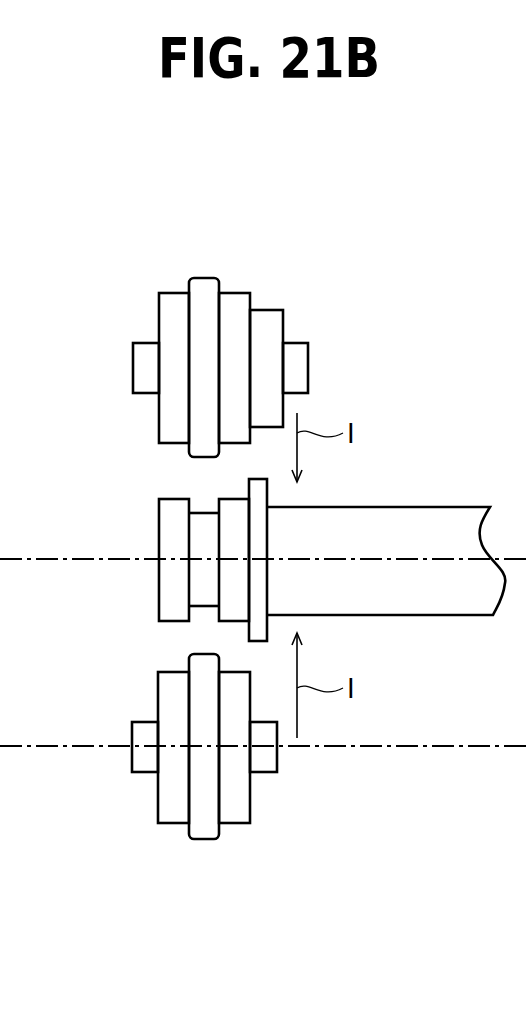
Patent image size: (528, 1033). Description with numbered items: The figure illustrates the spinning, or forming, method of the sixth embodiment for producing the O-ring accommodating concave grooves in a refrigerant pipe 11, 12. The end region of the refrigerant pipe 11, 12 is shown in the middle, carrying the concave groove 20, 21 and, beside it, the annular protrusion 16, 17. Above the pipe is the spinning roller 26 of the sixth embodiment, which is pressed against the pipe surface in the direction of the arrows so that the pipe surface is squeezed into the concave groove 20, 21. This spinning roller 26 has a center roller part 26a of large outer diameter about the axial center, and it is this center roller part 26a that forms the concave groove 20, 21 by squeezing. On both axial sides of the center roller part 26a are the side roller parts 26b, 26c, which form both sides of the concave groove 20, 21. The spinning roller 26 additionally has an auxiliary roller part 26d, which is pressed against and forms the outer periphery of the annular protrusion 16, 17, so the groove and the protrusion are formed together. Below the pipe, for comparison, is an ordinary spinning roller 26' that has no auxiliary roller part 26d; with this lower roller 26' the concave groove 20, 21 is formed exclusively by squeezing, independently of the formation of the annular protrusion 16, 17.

The spinning (forming) roller 26 is at (243, 315).
The center roller part 26a is at (202, 288).
The side roller part 26b is at (172, 303).
The side roller part 26c is at (235, 303).
The auxiliary roller part 26d is at (265, 313).
The spinning (forming) roller 26' is at (236, 777).
The annular protrusion 16 is at (351, 552).
The annular protrusion 17 is at (258, 533).
The concave groove 20 is at (137, 576).
The concave groove 21 is at (207, 595).
The refrigerant pipe 11 is at (386, 611).
The refrigerant pipe 12 is at (395, 620).